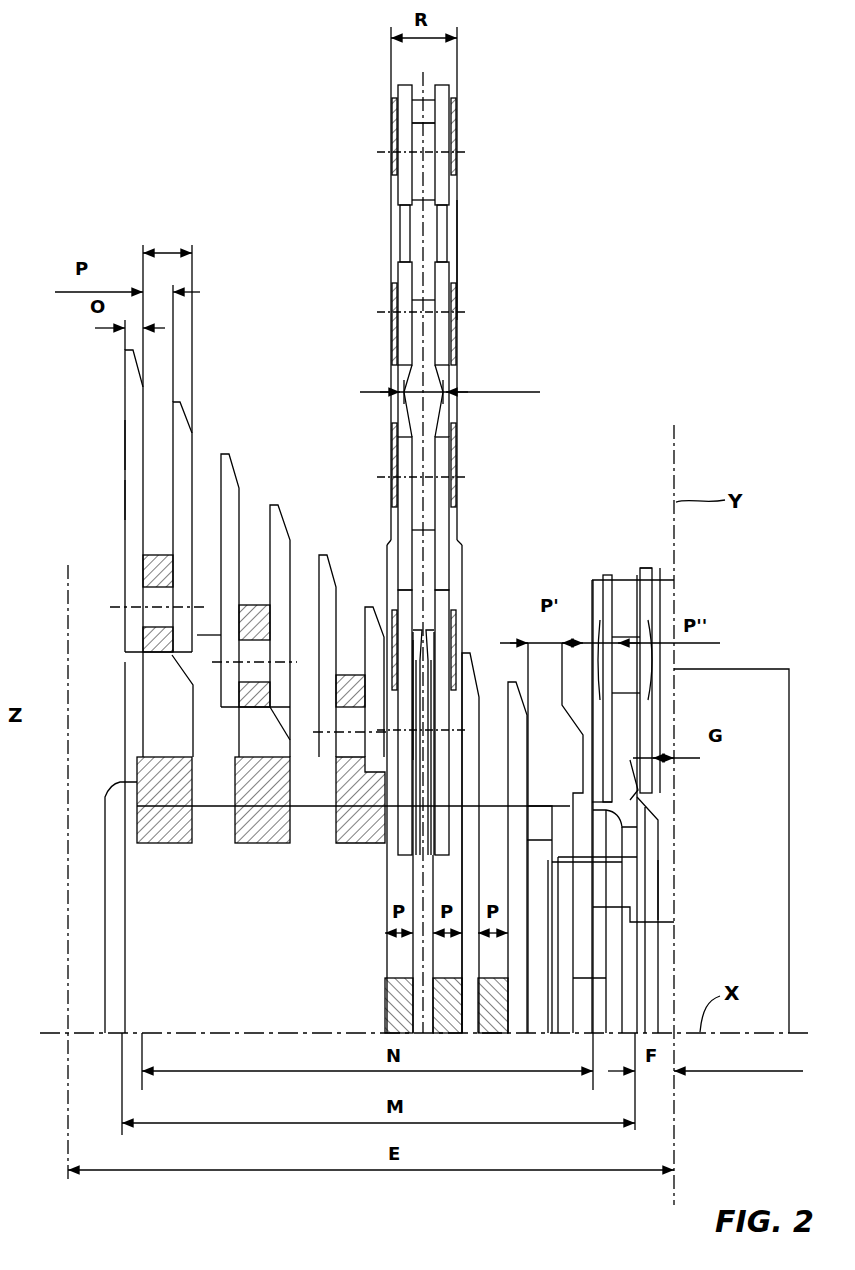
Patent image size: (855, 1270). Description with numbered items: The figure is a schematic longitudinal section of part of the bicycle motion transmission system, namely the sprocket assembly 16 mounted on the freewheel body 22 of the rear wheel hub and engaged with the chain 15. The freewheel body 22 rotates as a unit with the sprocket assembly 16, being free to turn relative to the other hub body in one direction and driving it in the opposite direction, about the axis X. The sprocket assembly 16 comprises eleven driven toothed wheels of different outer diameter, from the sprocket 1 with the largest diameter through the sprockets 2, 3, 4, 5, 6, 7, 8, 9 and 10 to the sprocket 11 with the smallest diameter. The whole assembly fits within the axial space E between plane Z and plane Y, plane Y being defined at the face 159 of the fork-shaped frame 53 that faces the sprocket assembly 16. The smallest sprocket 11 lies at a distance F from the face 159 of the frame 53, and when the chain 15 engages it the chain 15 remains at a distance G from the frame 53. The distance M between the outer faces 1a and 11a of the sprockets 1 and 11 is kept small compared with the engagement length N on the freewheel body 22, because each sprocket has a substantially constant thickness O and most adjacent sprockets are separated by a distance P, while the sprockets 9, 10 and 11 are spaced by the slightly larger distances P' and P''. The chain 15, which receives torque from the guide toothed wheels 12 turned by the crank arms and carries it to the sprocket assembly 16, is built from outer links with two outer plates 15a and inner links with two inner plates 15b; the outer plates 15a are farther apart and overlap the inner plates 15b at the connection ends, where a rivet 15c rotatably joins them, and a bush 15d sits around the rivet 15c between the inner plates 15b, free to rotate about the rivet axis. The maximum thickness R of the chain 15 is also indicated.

The sprocket 1 is at (133, 393).
The face of sprocket 1 1a is at (122, 444).
The sprocket 2 is at (182, 462).
The sprocket 3 is at (230, 522).
The sprocket 4 is at (280, 566).
The sprocket 5 is at (328, 635).
The sprocket 6 is at (375, 661).
The sprocket 7 is at (420, 648).
The sprocket 8 is at (467, 736).
The sprocket 9 is at (516, 787).
The sprocket 10 is at (565, 750).
The sprocket 11 is at (628, 772).
The face of sprocket 11 11a is at (634, 792).
The guide toothed wheel 12 is at (125, 494).
The chain 15 is at (580, 165).
The outer plate 15a is at (454, 180).
The inner plate 15b is at (405, 386).
The rivet 15c is at (392, 152).
The bush 15d is at (426, 124).
The sprocket assembly 16 is at (628, 308).
The freewheel body 22 is at (118, 877).
The frame 53 is at (748, 680).
The face of the frame 159 is at (665, 880).